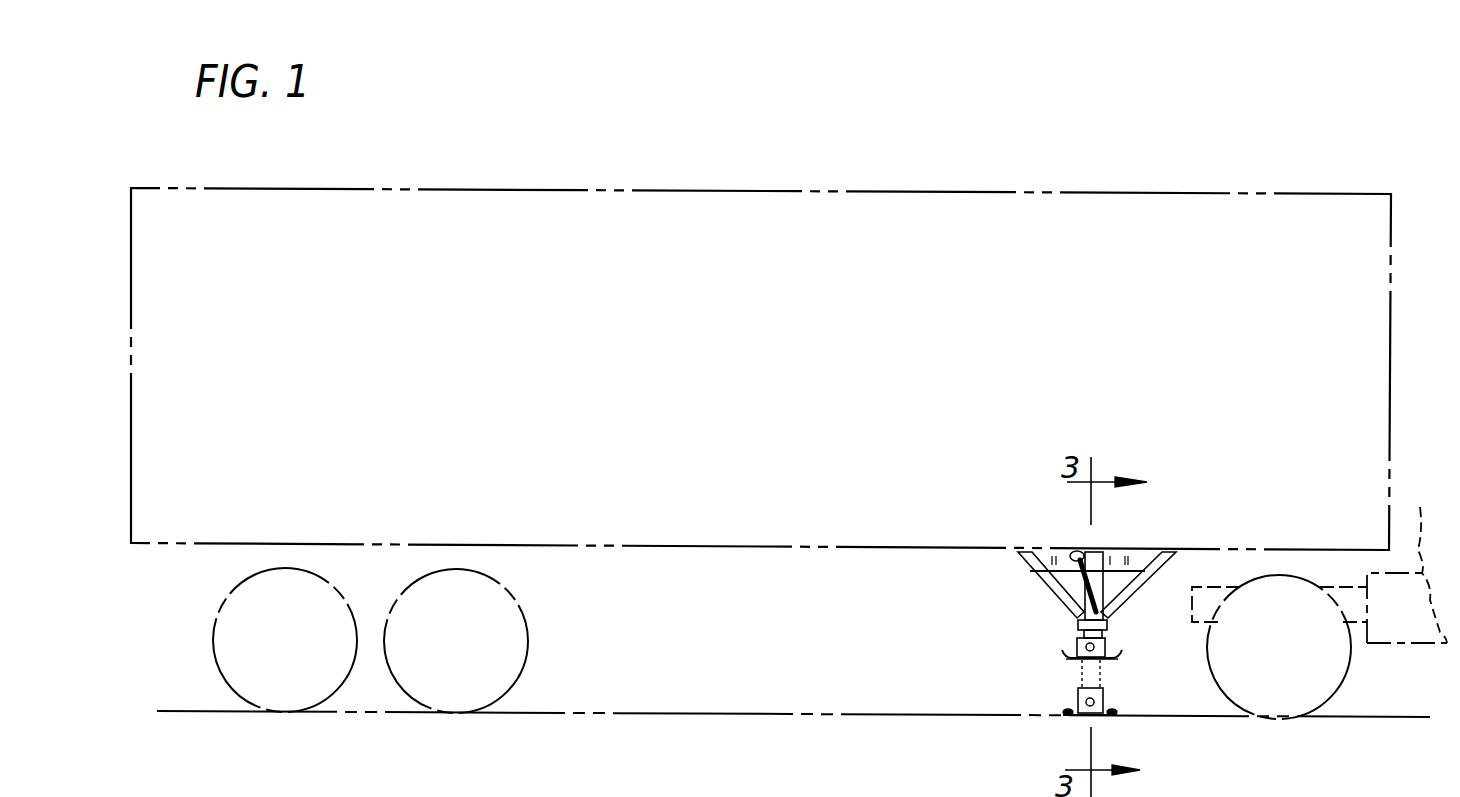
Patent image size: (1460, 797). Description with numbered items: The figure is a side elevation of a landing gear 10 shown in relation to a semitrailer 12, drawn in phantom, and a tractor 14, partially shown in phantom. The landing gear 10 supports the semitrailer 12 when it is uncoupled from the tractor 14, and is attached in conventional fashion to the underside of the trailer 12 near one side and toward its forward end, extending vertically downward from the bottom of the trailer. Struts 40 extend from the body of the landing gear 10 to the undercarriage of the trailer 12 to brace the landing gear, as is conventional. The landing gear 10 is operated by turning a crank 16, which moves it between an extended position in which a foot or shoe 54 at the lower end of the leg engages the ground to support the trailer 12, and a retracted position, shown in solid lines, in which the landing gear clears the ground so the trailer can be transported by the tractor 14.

The landing gear 10 is at (1038, 633).
The semitrailer 12 is at (1013, 194).
The tractor 14 is at (1319, 550).
The crank 16 is at (1077, 617).
The struts 40 is at (1030, 574).
The shoe 54 is at (1107, 662).